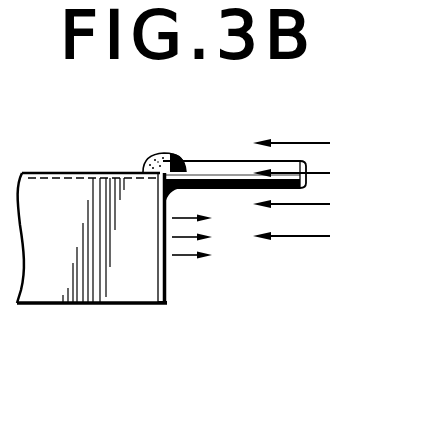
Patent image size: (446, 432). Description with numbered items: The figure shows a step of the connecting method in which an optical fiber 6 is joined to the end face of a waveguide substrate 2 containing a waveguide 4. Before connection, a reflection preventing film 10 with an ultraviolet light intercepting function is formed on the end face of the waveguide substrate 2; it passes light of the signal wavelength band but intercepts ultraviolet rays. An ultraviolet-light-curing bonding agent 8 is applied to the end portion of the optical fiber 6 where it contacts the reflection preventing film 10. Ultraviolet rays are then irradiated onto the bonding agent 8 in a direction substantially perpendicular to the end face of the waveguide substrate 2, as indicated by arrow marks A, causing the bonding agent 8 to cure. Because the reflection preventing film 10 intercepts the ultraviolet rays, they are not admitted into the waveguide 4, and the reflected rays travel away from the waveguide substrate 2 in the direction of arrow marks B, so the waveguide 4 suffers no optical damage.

The waveguide substrate 2 is at (47, 293).
The waveguide 4 is at (53, 172).
The optical fiber 6 is at (219, 162).
The bonding agent 8 is at (153, 156).
The reflection preventing film 10 is at (168, 292).
The arrow marks A is at (308, 143).
The arrow marks B is at (184, 257).